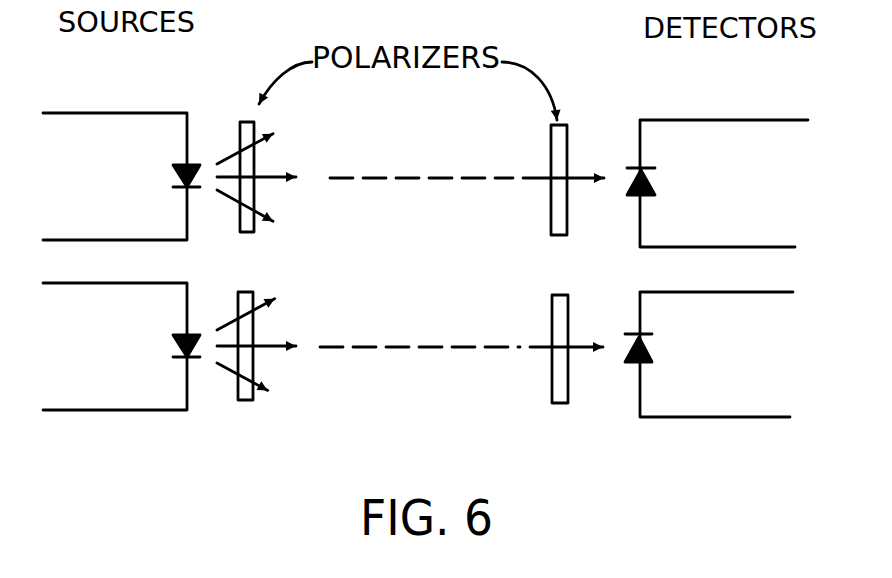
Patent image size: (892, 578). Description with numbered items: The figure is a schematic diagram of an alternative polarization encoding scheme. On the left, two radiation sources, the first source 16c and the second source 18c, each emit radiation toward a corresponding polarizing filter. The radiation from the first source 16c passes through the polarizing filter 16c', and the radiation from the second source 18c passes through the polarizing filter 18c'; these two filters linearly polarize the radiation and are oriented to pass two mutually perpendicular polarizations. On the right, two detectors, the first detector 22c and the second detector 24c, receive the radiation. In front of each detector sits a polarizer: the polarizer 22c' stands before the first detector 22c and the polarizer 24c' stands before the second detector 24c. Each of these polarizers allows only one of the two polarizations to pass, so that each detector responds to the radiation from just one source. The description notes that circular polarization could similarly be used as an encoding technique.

The source S1 16c is at (121, 145).
The source S2 18c is at (157, 377).
The polarizing filter 16c' is at (288, 184).
The polarizing filter 18c' is at (289, 327).
The detector D1 22c is at (717, 183).
The detector D2 24c is at (709, 354).
The polarizer 22c' is at (512, 173).
The polarizer 24c' is at (513, 353).